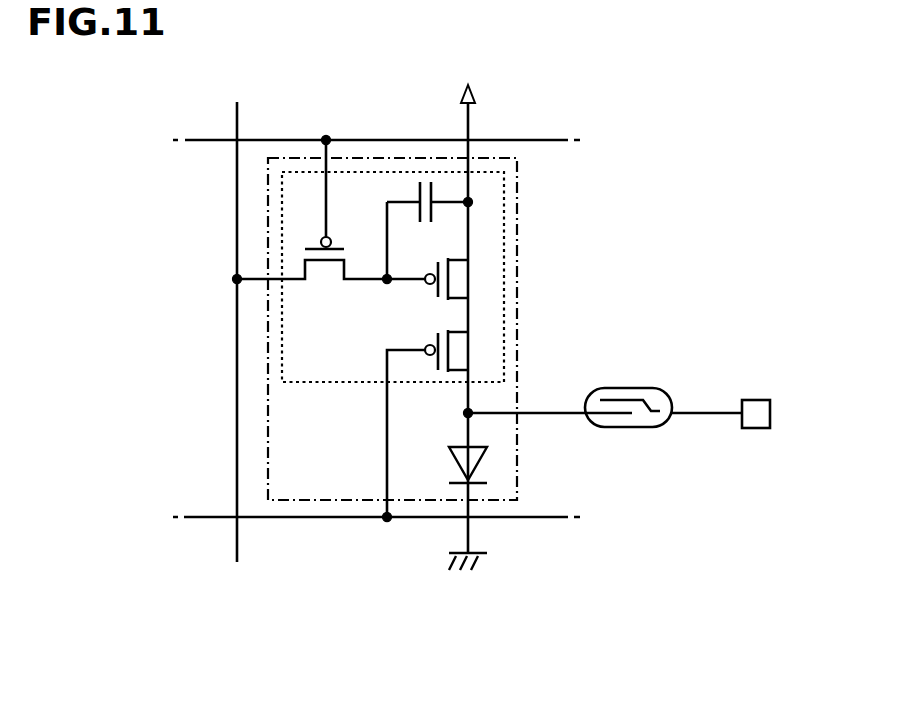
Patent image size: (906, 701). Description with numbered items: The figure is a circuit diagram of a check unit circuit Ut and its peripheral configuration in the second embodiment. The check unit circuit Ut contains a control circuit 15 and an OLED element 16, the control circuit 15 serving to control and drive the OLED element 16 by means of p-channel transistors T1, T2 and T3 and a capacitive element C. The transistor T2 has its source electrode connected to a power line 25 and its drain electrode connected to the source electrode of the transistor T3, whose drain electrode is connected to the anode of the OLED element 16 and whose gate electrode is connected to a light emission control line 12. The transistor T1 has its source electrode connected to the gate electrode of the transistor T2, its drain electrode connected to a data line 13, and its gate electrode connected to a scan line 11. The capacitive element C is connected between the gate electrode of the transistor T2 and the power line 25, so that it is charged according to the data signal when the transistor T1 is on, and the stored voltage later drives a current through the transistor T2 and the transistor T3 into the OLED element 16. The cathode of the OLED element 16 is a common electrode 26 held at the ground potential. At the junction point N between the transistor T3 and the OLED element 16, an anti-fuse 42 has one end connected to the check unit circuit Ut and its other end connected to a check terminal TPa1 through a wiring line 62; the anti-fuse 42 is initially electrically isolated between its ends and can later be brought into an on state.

The scan line 11 is at (523, 140).
The light emission control line 12 is at (300, 518).
The data line 13 is at (240, 128).
The control circuit 15 is at (517, 220).
The OLED element 16 is at (450, 458).
The power line 25 is at (468, 122).
The common electrode 26 is at (468, 535).
The anti-fuse 42 is at (637, 388).
The wiring line 62 is at (688, 415).
The transistor T1 is at (326, 285).
The transistor T2 is at (460, 280).
The transistor T3 is at (460, 348).
The capacitive element C is at (416, 184).
The junction point N is at (458, 412).
The check terminal TPa1 is at (758, 400).
The check unit circuit Ut is at (268, 458).